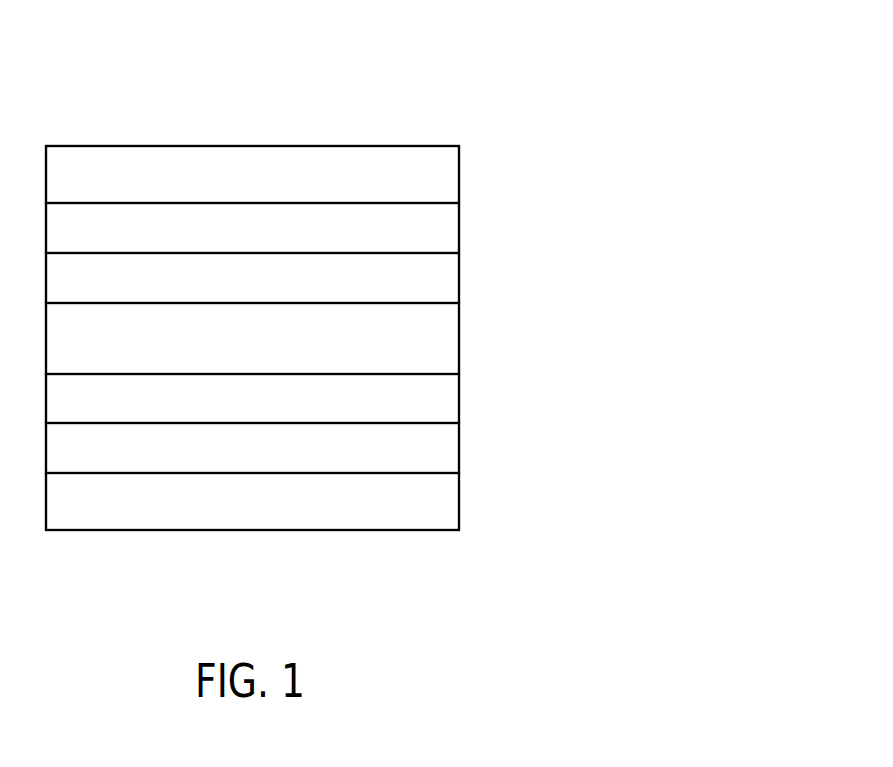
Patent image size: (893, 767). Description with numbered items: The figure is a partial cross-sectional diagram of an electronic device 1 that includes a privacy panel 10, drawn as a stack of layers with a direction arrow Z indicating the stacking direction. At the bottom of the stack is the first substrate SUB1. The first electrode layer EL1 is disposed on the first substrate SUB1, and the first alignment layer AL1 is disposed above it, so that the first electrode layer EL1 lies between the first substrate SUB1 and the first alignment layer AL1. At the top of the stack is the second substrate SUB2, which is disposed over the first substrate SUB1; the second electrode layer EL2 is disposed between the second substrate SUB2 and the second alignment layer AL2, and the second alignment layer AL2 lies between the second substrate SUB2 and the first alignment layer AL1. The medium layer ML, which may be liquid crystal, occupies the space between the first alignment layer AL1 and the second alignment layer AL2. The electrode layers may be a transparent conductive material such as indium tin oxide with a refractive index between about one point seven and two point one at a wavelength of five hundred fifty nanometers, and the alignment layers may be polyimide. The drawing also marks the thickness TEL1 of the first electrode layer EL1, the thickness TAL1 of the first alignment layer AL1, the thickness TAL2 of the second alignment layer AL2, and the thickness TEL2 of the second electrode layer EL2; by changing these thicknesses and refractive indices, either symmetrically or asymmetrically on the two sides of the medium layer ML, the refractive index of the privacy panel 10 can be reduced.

The electronic device 1 is at (692, 588).
The privacy panel 10 is at (588, 147).
The second substrate SUB2 is at (436, 175).
The second electrode layer EL2 is at (436, 225).
The second alignment layer AL2 is at (436, 273).
The medium layer ML is at (436, 346).
The first alignment layer AL1 is at (436, 395).
The first electrode layer EL1 is at (436, 444).
The first substrate SUB1 is at (436, 502).
The thickness of second electrode layer TEL2 is at (99, 204).
The thickness of second alignment layer TAL2 is at (99, 254).
The thickness of first alignment layer TAL1 is at (99, 375).
The thickness of first electrode layer TEL1 is at (99, 424).
The Z axis direction Z is at (742, 140).